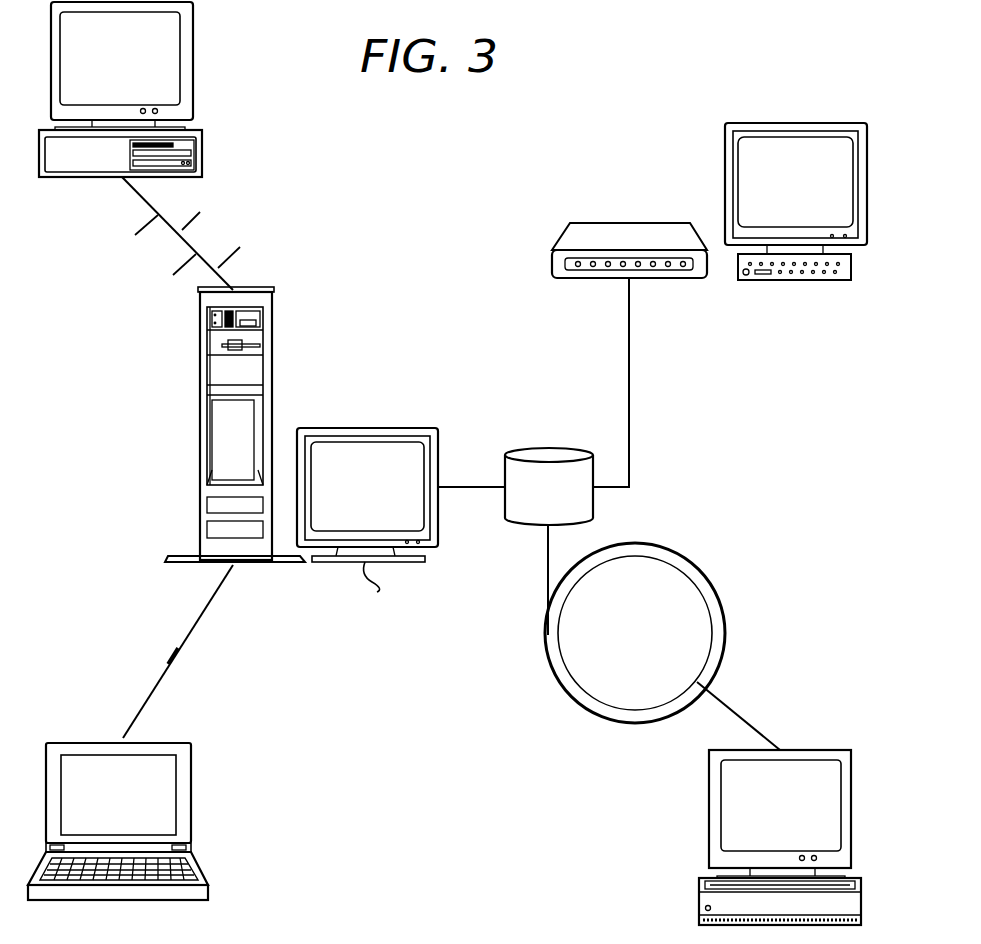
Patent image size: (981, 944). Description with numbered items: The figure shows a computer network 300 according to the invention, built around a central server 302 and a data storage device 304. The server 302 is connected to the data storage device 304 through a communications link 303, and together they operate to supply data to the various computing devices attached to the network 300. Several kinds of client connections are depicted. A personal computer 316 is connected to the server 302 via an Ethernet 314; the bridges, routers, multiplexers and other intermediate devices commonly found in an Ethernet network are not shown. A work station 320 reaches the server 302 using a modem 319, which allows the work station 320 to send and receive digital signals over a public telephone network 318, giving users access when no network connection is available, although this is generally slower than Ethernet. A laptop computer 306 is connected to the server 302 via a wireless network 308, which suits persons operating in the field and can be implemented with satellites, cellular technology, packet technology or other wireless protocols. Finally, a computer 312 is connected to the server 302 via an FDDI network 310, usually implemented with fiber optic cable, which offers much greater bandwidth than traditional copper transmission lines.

The network 300 is at (698, 58).
The server 302 is at (372, 566).
The communications link 303 is at (462, 483).
The data storage device 304 is at (549, 449).
The laptop computer 306 is at (193, 795).
The wireless network 308 is at (170, 670).
The FDDI network 310 is at (690, 563).
The computer 312 is at (708, 808).
The Ethernet 314 is at (139, 198).
The personal computer 316 is at (193, 62).
The public telephone network 318 is at (629, 387).
The modem 319 is at (622, 228).
The work station 320 is at (722, 143).